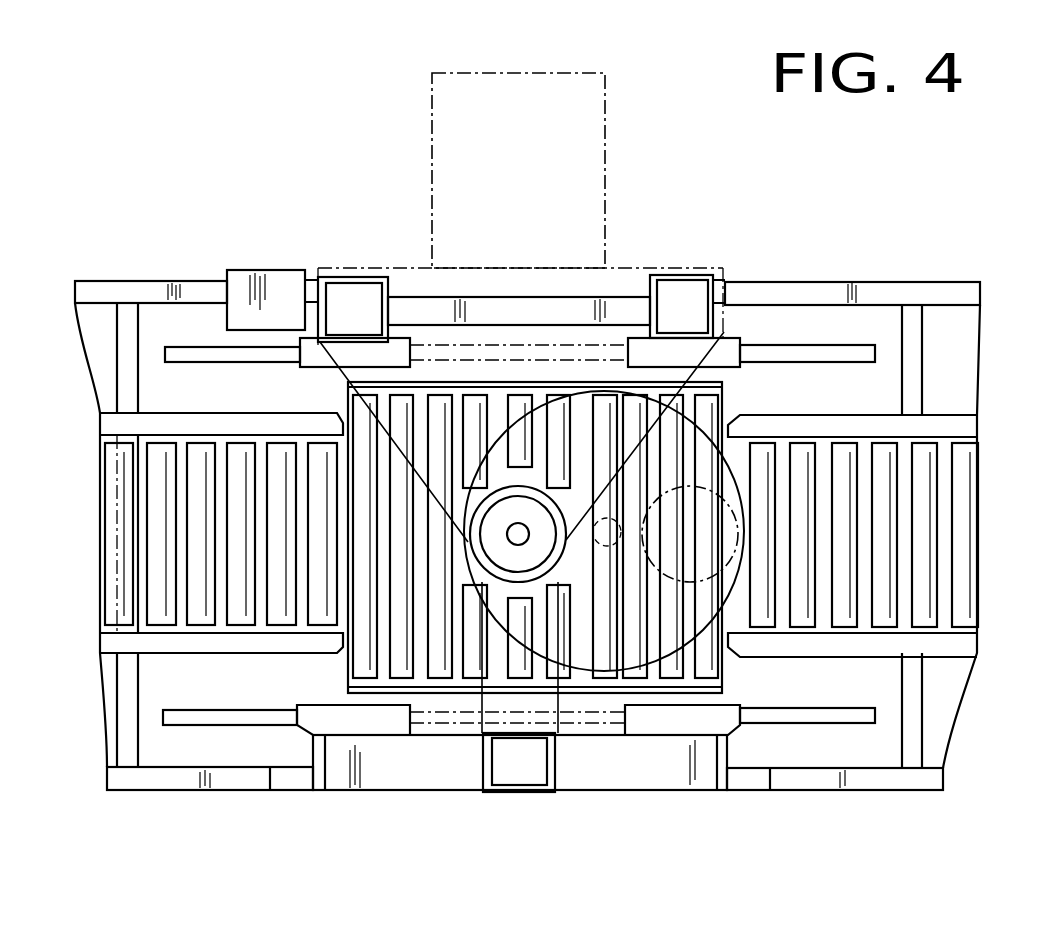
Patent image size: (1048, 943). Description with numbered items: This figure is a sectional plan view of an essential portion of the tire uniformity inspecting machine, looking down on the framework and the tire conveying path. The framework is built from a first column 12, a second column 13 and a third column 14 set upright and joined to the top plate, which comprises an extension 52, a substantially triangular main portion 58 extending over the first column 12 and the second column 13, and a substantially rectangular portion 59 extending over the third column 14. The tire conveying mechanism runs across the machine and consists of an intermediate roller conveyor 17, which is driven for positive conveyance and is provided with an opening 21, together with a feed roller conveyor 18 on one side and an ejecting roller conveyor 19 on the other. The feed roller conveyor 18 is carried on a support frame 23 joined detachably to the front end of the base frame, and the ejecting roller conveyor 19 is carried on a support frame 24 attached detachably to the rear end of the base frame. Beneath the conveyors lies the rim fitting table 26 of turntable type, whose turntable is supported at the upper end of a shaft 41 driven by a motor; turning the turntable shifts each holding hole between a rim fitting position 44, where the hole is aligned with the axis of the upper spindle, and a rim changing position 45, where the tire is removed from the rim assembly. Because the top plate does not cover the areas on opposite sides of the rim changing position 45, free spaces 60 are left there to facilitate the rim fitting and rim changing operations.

The extension 52 is at (618, 166).
The first column 12 is at (356, 277).
The second column 13 is at (683, 275).
The rim fitting position 44 is at (513, 486).
The main portion 58 is at (372, 400).
The shaft 41 is at (625, 513).
The rim fitting table 26 is at (737, 613).
The rim changing position 45 is at (673, 582).
The opening 21 is at (505, 588).
The intermediate roller conveyor 17 is at (358, 660).
The ejecting roller conveyor 19 is at (113, 576).
The feed roller conveyor 18 is at (960, 578).
The free spaces 60 is at (393, 561).
The third column 14 is at (510, 790).
The rectangular portion 59 is at (560, 752).
The support frame 24 is at (258, 791).
The support frame 23 is at (880, 778).